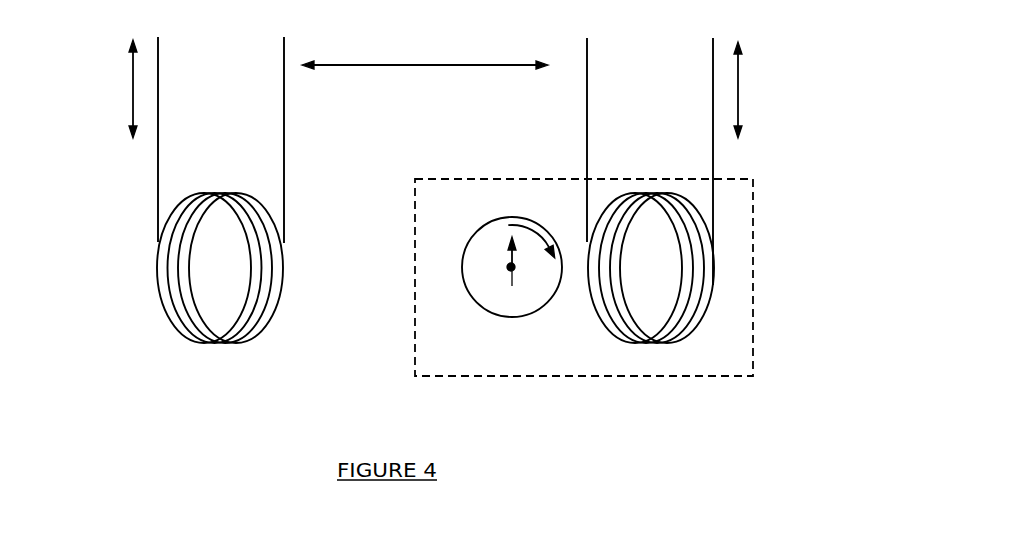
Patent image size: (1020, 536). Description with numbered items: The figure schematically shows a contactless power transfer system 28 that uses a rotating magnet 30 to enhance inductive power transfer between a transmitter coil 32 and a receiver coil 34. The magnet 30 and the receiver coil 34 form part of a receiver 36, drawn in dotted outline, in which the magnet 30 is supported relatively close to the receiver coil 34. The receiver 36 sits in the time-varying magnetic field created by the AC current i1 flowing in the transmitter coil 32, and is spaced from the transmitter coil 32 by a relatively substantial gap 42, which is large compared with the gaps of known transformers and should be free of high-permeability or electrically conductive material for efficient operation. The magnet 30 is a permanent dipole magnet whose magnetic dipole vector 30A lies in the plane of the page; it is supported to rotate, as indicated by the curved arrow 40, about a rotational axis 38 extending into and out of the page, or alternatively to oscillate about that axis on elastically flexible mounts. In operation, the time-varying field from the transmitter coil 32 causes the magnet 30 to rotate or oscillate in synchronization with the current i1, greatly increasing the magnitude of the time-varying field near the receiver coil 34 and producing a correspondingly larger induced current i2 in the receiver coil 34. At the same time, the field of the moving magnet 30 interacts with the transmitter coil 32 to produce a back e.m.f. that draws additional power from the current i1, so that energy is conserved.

The contactless power transfer system 28 is at (468, 415).
The magnet 30 is at (475, 302).
The magnetic dipole vector 30A is at (512, 286).
The transmitter coil 32 is at (172, 319).
The receiver coil 34 is at (713, 285).
The receiver 36 is at (496, 178).
The rotational axis 38 is at (508, 266).
The curved arrow 40 is at (532, 226).
The gap 42 is at (400, 65).
The AC current i1 is at (133, 80).
The induced current i2 is at (740, 70).